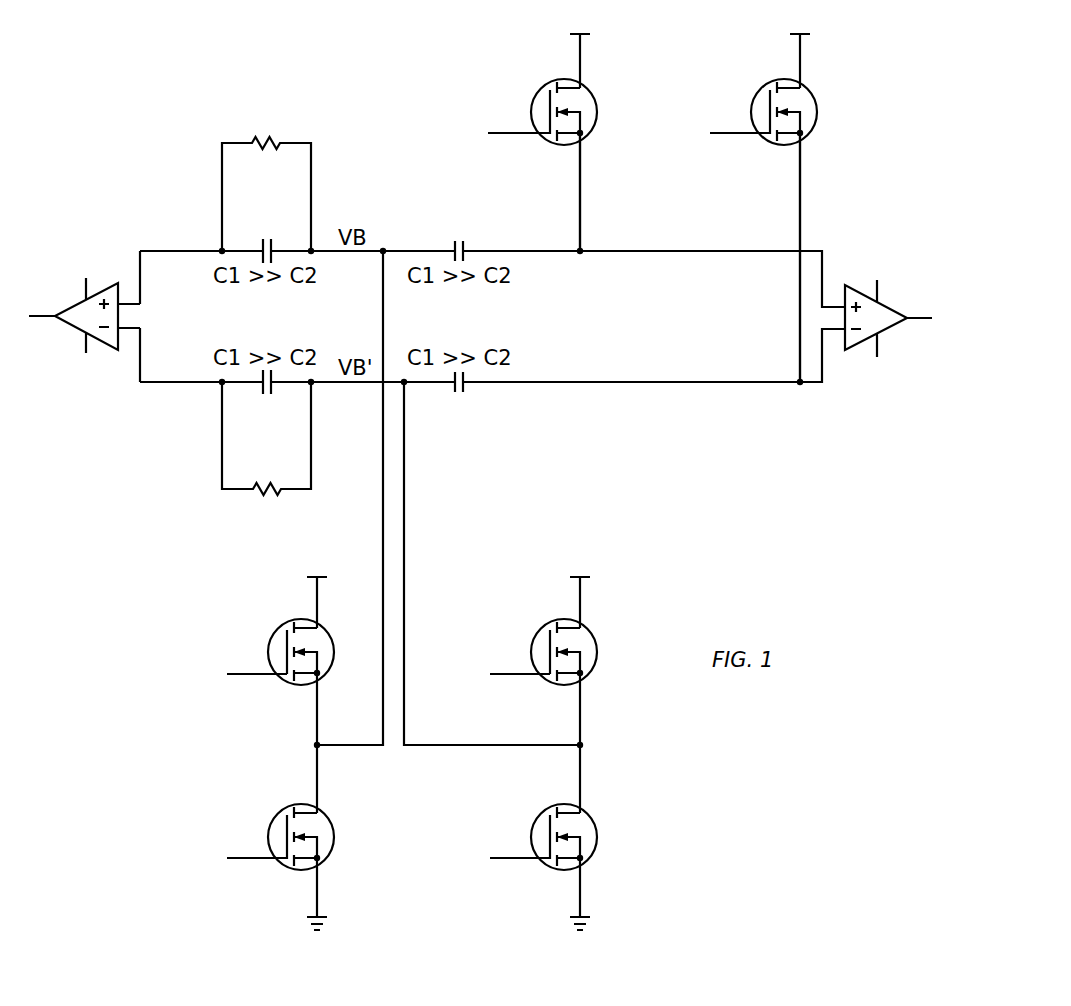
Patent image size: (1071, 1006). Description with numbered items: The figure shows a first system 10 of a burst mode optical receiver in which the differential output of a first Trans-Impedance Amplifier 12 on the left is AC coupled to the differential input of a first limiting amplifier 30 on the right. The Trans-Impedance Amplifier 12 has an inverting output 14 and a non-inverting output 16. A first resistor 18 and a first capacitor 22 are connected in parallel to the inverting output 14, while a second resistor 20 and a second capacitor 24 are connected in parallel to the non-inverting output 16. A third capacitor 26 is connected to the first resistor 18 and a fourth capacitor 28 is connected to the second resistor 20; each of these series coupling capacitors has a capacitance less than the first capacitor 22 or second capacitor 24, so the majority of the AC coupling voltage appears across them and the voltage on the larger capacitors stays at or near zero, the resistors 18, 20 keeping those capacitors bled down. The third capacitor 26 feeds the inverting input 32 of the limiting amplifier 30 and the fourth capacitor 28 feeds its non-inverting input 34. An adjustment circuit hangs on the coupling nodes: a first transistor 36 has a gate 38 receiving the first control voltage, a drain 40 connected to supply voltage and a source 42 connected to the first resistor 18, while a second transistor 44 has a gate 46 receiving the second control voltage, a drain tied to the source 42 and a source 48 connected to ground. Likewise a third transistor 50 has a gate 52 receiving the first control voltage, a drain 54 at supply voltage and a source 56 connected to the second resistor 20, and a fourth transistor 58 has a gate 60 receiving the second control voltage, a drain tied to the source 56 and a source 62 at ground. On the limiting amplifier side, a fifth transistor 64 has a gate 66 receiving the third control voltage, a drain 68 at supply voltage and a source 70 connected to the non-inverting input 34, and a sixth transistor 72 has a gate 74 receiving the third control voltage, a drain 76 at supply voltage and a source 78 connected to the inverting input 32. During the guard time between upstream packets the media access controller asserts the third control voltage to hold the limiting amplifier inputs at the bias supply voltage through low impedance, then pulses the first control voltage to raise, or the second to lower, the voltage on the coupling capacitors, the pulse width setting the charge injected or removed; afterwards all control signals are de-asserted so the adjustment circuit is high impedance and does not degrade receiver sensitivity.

The first system 10 is at (382, 78).
The first Trans-Impedance Amplifier 12 is at (70, 335).
The inverting output 14 is at (180, 385).
The non-inverting output 16 is at (180, 254).
The first resistor 18 is at (265, 494).
The second resistor 20 is at (270, 140).
The first capacitor 22 is at (265, 394).
The second capacitor 24 is at (265, 238).
The third capacitor 26 is at (457, 394).
The fourth capacitor 28 is at (457, 240).
The first limiting amplifier 30 is at (890, 333).
The inverting input 32 is at (772, 384).
The non-inverting input 34 is at (742, 254).
The first transistor 36 is at (274, 632).
The gate 38 is at (253, 677).
The drain 40 is at (320, 608).
The source 42 is at (322, 742).
The second transistor 44 is at (333, 820).
The gate 46 is at (253, 861).
The source 48 is at (320, 885).
The third transistor 50 is at (537, 632).
The gate 52 is at (516, 677).
The drain 54 is at (583, 608).
The source 56 is at (585, 742).
The fourth transistor 58 is at (596, 820).
The gate 60 is at (516, 861).
The source 62 is at (583, 885).
The fifth transistor 64 is at (538, 92).
The gate 66 is at (518, 136).
The drain 68 is at (582, 68).
The source 70 is at (582, 190).
The sixth transistor 72 is at (758, 92).
The gate 74 is at (738, 136).
The drain 76 is at (802, 68).
The source 78 is at (802, 190).